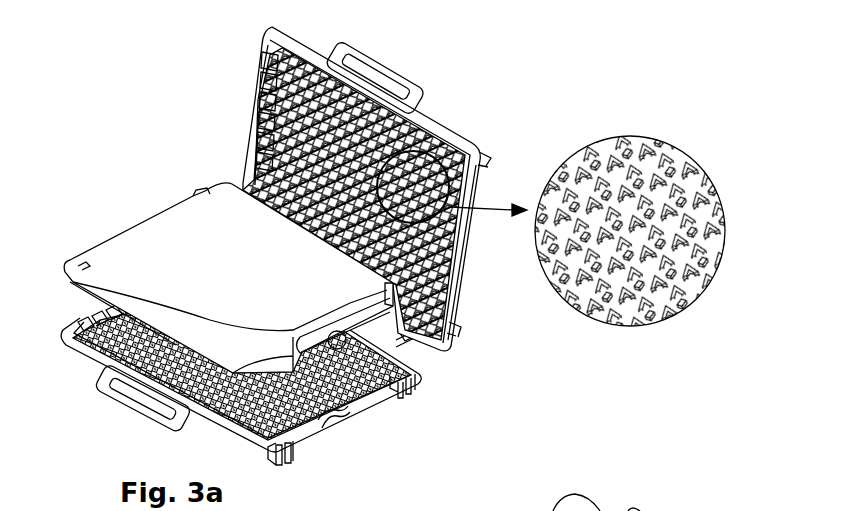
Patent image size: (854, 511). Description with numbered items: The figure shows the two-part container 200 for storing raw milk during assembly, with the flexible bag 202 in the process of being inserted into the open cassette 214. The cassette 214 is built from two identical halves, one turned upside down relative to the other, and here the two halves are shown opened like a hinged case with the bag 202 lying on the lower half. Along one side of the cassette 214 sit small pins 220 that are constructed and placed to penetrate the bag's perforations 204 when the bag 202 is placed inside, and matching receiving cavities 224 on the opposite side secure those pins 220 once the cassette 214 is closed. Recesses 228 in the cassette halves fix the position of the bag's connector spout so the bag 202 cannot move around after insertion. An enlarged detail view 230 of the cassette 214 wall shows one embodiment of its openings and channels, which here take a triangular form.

The container 200 is at (120, 70).
The flexible bag 202 is at (200, 233).
The bag's perforations 204 is at (82, 262).
The cassette 214 is at (268, 97).
The small pins 220 is at (79, 327).
The receiving cavities 224 is at (294, 445).
The recesses 228 is at (345, 413).
The honeycomb cushioning structure (detail) 230 is at (667, 150).